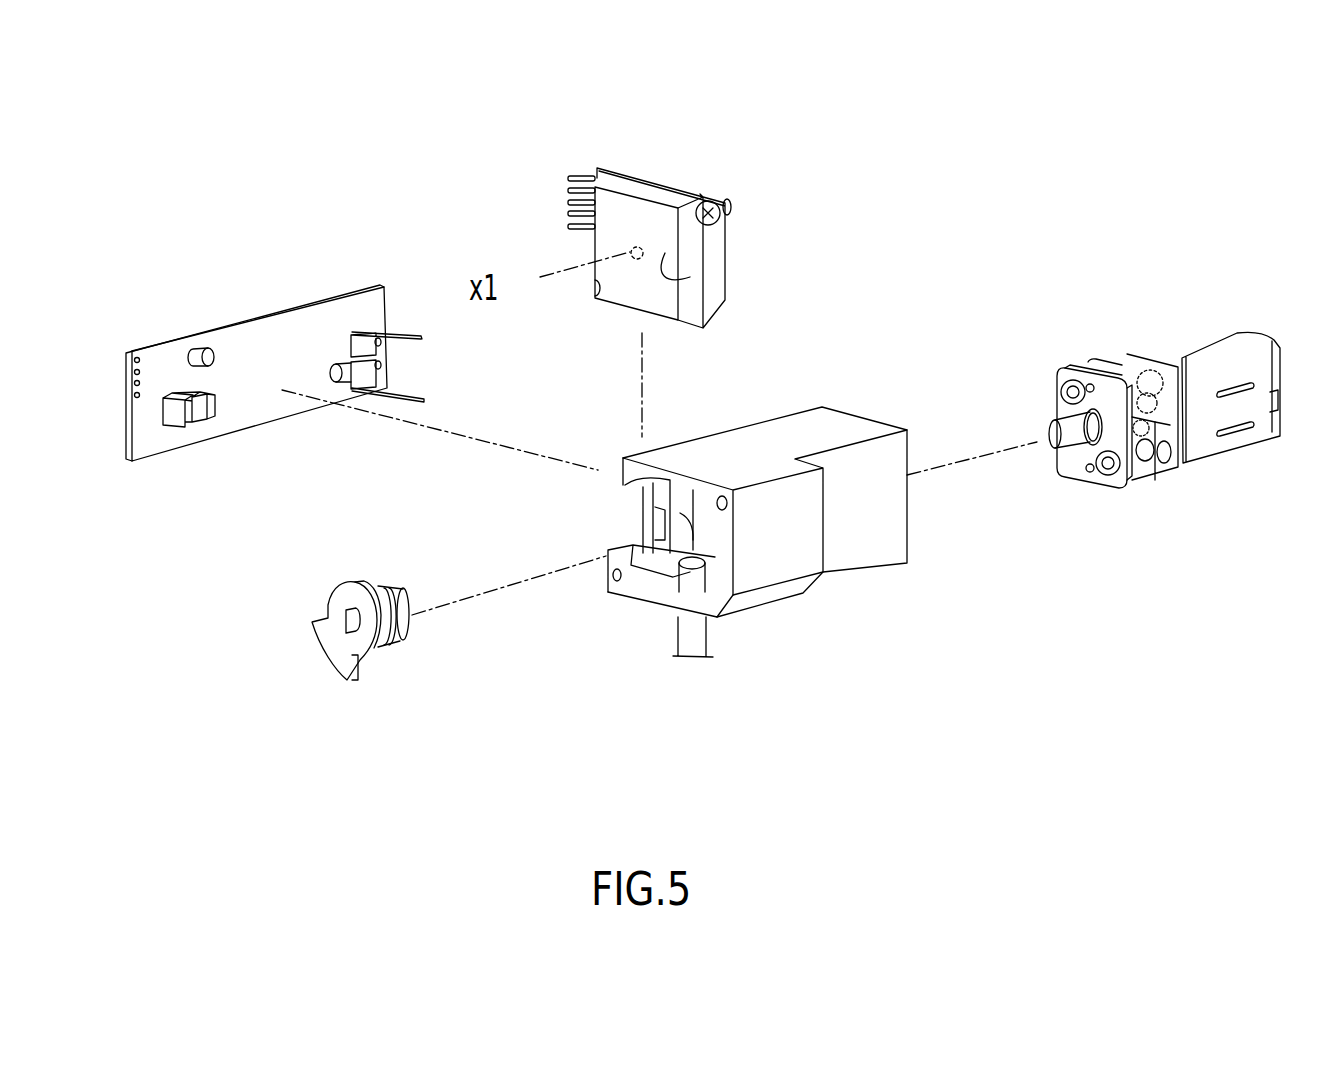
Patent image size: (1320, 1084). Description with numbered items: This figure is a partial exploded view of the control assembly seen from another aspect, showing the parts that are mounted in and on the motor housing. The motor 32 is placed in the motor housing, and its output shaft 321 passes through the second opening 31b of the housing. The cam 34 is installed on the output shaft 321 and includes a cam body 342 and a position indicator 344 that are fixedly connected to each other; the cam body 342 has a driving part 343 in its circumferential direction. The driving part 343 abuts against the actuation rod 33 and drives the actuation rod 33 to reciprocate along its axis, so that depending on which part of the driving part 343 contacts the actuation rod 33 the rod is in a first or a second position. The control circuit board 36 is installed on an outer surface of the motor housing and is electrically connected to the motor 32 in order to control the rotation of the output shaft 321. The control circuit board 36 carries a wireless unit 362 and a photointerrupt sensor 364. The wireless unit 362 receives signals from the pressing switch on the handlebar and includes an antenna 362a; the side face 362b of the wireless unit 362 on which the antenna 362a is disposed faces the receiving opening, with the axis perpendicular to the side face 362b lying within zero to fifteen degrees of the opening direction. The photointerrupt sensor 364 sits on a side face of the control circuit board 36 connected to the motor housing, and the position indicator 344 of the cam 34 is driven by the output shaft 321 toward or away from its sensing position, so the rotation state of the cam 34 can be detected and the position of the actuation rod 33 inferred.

The control circuit board 36 is at (249, 313).
The photointerrupt sensor 364 is at (172, 422).
The wireless unit 362 is at (712, 192).
The antenna 362a is at (632, 240).
The side face 362b is at (690, 277).
The second opening 31b is at (690, 515).
The actuation rod 33 is at (710, 640).
The motor 32 is at (1192, 338).
The output shaft 321 is at (1078, 441).
The cam 34 is at (385, 664).
The cam body 342 is at (395, 644).
The driving part 343 is at (390, 592).
The position indicator 344 is at (347, 682).